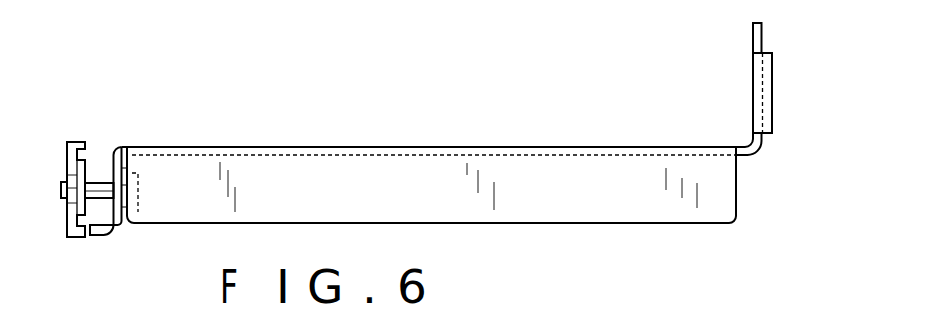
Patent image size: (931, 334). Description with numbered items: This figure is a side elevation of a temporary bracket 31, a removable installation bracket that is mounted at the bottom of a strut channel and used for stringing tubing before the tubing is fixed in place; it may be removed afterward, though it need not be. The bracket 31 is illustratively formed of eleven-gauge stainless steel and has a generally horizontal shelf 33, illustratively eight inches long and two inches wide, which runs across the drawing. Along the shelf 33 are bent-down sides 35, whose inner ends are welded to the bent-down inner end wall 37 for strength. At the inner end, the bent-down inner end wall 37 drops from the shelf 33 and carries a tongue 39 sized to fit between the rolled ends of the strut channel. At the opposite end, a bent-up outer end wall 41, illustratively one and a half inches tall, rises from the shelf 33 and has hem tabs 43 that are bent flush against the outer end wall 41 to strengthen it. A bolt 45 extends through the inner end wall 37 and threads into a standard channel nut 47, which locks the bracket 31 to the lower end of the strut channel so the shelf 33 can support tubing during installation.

The temporary bracket 31 is at (365, 118).
The shelf 33 is at (423, 147).
The bent-down sides 35 is at (475, 195).
The bent-down inner end wall 37 is at (120, 171).
The tongue 39 is at (99, 235).
The bent-up outer end wall 41 is at (763, 42).
The hem tabs 43 is at (772, 127).
The bolt 45 is at (97, 187).
The channel nut 47 is at (70, 224).